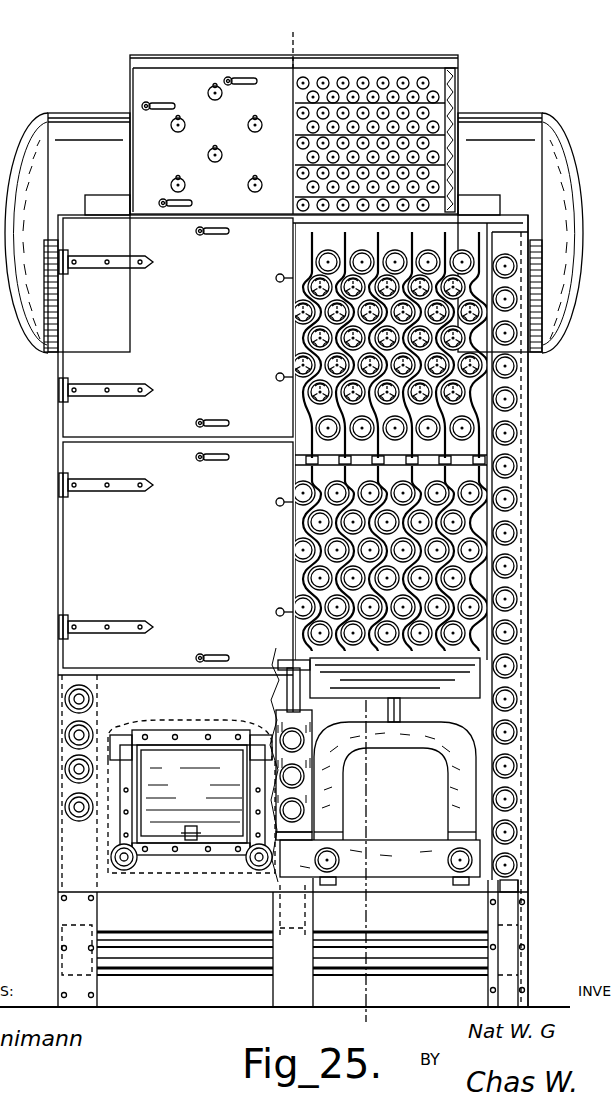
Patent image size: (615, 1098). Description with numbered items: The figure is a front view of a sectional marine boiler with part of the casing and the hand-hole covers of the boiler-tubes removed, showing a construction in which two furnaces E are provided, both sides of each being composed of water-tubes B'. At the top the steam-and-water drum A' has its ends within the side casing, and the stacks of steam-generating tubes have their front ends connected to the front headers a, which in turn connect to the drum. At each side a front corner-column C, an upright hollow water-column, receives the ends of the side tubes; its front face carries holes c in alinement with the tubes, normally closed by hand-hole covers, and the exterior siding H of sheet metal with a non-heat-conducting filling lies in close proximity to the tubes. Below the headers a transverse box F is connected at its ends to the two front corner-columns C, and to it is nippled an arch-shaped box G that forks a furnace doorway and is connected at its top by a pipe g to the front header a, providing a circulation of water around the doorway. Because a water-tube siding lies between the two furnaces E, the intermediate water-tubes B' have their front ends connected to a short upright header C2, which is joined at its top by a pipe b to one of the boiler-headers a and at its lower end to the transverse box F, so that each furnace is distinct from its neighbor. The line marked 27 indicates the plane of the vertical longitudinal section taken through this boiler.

The section line 27 is at (333, 532).
The steam-and-water drum A' is at (520, 233).
The front header a is at (290, 656).
The pipe b is at (292, 681).
The short upright header C2 is at (288, 722).
The water-tubes B' is at (311, 766).
The holes c is at (511, 437).
The front corner-column C is at (511, 552).
The exterior siding H is at (530, 728).
The pipe g is at (401, 712).
The arch-shaped box G is at (395, 781).
The furnace E is at (253, 796).
The transverse box F is at (380, 862).